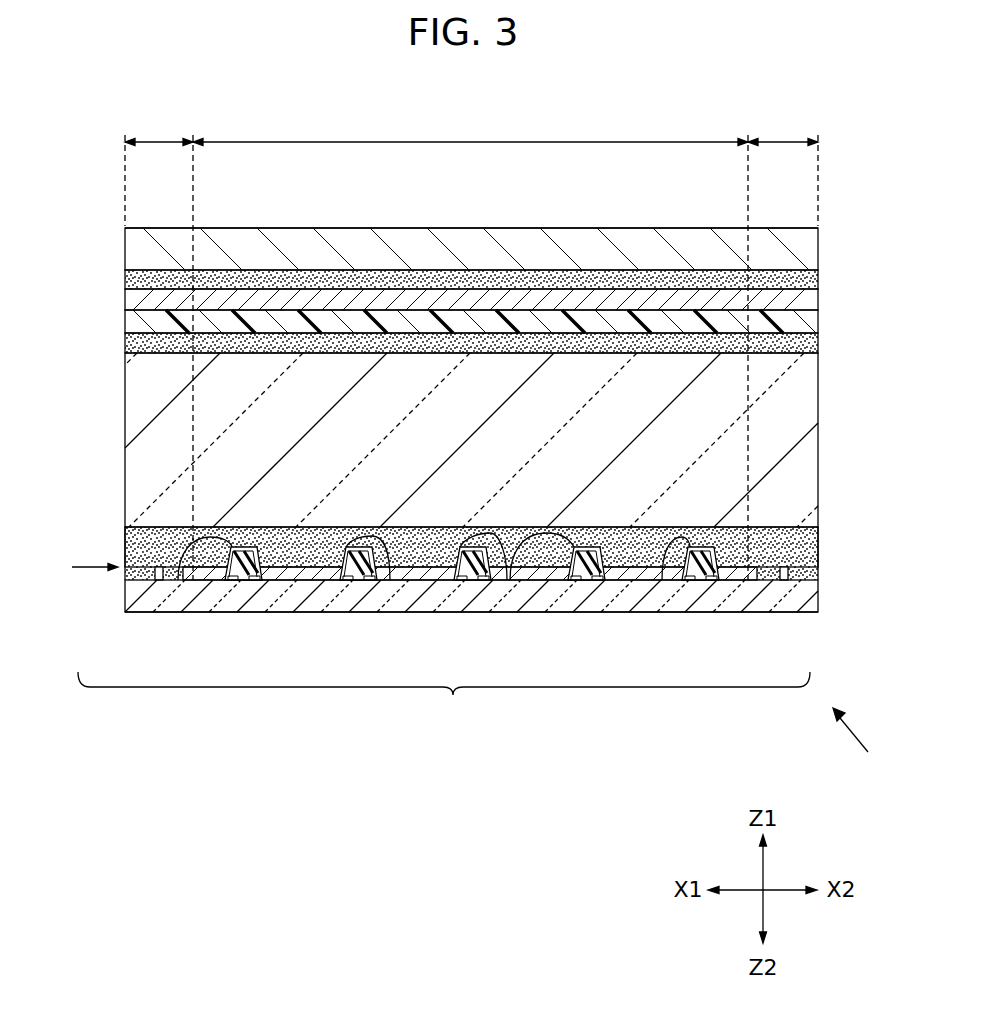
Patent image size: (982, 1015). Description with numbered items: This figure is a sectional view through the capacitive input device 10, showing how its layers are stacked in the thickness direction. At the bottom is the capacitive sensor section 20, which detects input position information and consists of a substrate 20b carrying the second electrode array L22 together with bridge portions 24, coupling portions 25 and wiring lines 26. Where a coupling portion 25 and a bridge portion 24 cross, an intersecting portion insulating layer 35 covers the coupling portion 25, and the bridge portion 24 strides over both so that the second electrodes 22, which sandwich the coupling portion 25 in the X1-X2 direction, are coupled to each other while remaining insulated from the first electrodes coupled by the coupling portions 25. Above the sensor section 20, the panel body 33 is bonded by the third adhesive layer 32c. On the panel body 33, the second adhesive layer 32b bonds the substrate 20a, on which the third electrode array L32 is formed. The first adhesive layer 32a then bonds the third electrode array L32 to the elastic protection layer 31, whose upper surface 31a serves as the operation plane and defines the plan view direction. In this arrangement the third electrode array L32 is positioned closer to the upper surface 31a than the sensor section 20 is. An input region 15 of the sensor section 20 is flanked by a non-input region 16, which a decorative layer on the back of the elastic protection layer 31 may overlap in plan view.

The capacitive input device 10 is at (866, 739).
The input region 15 is at (470, 127).
The non-input region 16 is at (471, 344).
The capacitive sensor section 20 is at (448, 653).
The substrate 20a is at (140, 326).
The substrate 20b is at (135, 597).
The second electrode 22 is at (188, 583).
The bridge portion 24 is at (178, 582).
The coupling portion 25 is at (242, 583).
The wiring line 26 is at (160, 583).
The elastic protection layer 31 is at (147, 256).
The upper surface 31a is at (645, 227).
The first adhesive layer 32a is at (792, 280).
The second adhesive layer 32b is at (792, 342).
The third adhesive layer 32c is at (788, 540).
The panel body 33 is at (137, 390).
The intersecting portion insulating layer 35 is at (253, 583).
The second electrode array L22 is at (70, 561).
The third electrode array L32 is at (137, 297).